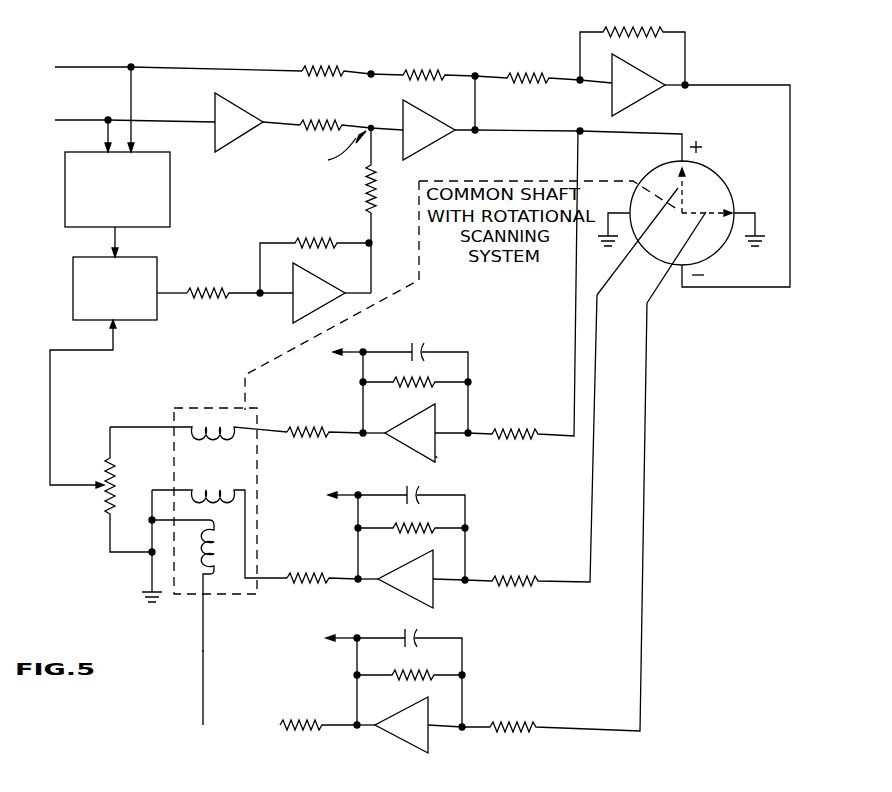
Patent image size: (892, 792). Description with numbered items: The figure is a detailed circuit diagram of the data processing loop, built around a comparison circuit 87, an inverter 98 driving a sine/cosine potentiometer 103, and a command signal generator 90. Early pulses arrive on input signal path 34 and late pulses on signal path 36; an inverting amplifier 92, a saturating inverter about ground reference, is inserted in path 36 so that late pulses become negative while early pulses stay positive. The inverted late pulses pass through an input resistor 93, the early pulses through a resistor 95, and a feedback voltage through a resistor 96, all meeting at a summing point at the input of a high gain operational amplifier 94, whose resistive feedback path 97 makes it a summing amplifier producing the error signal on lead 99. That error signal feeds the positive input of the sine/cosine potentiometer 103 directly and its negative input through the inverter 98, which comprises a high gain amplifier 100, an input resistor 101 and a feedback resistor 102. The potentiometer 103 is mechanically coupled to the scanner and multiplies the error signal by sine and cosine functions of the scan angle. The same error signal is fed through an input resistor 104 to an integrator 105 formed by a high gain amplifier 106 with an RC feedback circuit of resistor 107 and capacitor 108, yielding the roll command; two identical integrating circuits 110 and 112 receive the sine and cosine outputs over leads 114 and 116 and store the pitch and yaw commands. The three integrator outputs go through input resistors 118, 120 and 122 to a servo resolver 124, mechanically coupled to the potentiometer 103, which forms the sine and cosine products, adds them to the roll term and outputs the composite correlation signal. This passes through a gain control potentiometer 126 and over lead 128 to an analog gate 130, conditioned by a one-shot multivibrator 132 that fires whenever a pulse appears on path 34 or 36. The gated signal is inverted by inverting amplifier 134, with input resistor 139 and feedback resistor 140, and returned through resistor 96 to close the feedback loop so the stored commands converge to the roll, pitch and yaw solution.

The input signal path 34 is at (117, 62).
The signal path 36 is at (70, 122).
The comparison circuit 87 is at (398, 106).
The command signal generator 90 is at (245, 667).
The inverting amplifier 92 is at (237, 104).
The input resistor 93 is at (333, 112).
The operational amplifier 94 is at (420, 141).
The resistor 95 is at (333, 64).
The resistor 96 is at (366, 198).
The resistive feedback path 97 is at (441, 66).
The inverter 98 is at (735, 121).
The lead 99 is at (540, 135).
The high gain amplifier 100 is at (633, 64).
The input resistor 101 is at (518, 70).
The feedback resistor 102 is at (641, 28).
The sine/cosine potentiometer 103 is at (708, 176).
The input resistor 104 is at (534, 428).
The integrator 105 is at (410, 467).
The high gain amplifier 106 is at (440, 453).
The resistor 107 is at (405, 389).
The capacitor 108 is at (423, 343).
The integrating circuit 110 is at (388, 611).
The integrating circuit 112 is at (385, 761).
The lead 114 is at (593, 484).
The lead 116 is at (647, 474).
The input resistor 118 is at (324, 444).
The input resistor 120 is at (326, 588).
The input resistor 122 is at (324, 736).
The servo resolver 124 is at (183, 594).
The gain control potentiometer 126 is at (115, 494).
The lead 128 is at (113, 338).
The analog gate 130 is at (157, 266).
The one-shot multivibrator 132 is at (170, 190).
The inverting amplifier 134 is at (293, 311).
The input resistor 139 is at (222, 288).
The feedback resistor 140 is at (322, 238).